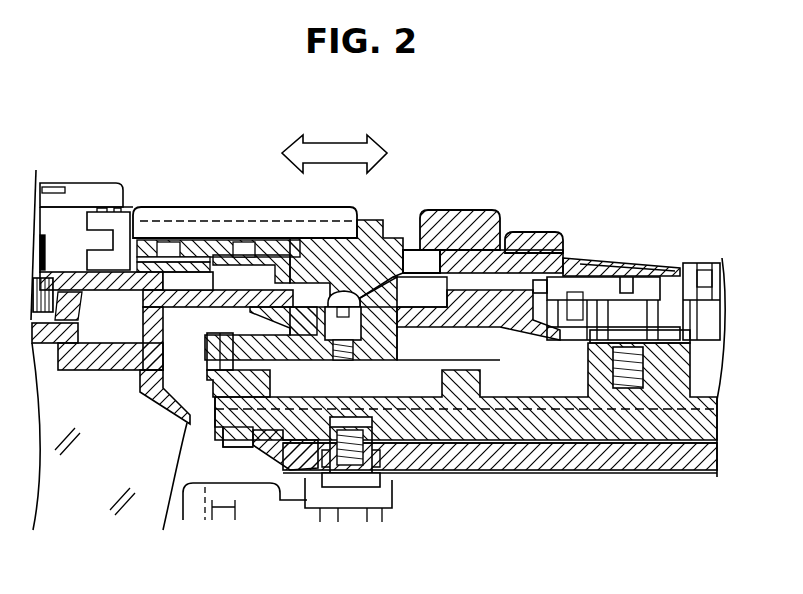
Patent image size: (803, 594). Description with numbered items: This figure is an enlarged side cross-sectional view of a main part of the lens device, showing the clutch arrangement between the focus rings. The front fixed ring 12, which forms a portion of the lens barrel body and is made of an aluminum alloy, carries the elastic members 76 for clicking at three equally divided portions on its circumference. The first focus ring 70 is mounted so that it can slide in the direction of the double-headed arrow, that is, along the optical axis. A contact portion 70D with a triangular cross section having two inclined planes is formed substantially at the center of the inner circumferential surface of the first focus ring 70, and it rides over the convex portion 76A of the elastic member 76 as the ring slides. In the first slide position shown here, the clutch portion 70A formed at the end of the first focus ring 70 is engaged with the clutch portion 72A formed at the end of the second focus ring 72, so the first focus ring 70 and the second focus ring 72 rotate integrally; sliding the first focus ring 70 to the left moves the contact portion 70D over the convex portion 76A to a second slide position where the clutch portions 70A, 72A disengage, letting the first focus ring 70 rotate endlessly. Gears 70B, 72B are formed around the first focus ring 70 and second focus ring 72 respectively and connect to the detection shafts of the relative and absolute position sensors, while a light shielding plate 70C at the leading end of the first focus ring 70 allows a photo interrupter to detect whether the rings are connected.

The first focus ring 70 is at (212, 205).
The clutch portion (gear) 70A is at (417, 262).
The gear 70B is at (506, 213).
The light shielding plate 70C is at (93, 240).
The contact portion 70D is at (400, 305).
The second focus ring 72 is at (563, 263).
The clutch portion (gear) 72A is at (501, 261).
The gear 72B is at (522, 235).
The elastic member for clicking 76 is at (317, 310).
The convex portion 76A is at (340, 300).
The front fixed ring 12 is at (397, 326).